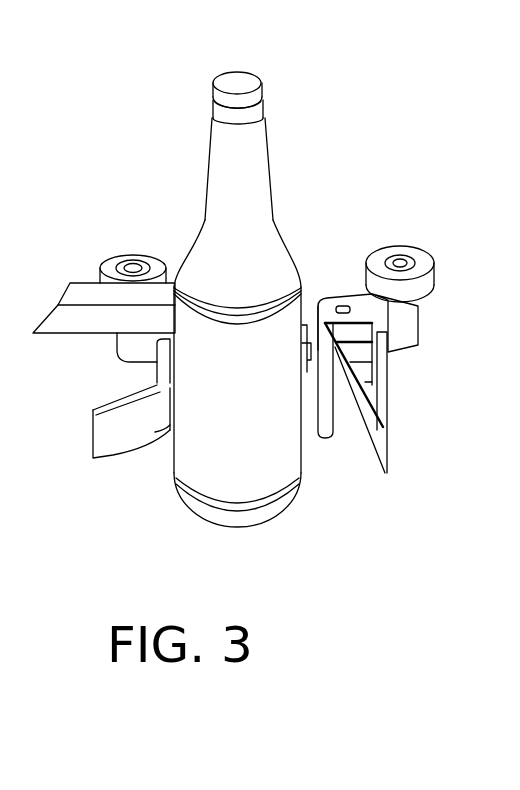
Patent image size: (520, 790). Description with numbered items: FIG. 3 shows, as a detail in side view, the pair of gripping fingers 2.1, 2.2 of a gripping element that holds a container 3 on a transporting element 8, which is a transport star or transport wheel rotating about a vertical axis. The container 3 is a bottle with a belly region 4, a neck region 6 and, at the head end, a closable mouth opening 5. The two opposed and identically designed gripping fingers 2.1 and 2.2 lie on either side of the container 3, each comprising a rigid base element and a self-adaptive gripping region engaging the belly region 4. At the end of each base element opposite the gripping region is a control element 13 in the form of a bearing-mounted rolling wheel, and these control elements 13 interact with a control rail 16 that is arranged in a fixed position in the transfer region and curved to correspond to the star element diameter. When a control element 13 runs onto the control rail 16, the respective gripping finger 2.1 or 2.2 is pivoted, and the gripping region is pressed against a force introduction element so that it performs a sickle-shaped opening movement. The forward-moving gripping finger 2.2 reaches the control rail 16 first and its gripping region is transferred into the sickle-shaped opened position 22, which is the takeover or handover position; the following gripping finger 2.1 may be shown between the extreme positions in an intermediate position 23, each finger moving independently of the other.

The container 3 is at (262, 329).
The belly region 4 is at (247, 463).
The closable mouth opening 5 is at (247, 83).
The neck region 6 is at (258, 178).
The transporting element 8 is at (393, 537).
The control element 13 is at (115, 255).
The control rail 16 is at (57, 319).
The gripping finger 2.2 is at (139, 458).
The opened position 22 is at (118, 442).
The gripping finger 2.1 is at (417, 359).
The intermediate position 23 is at (390, 438).